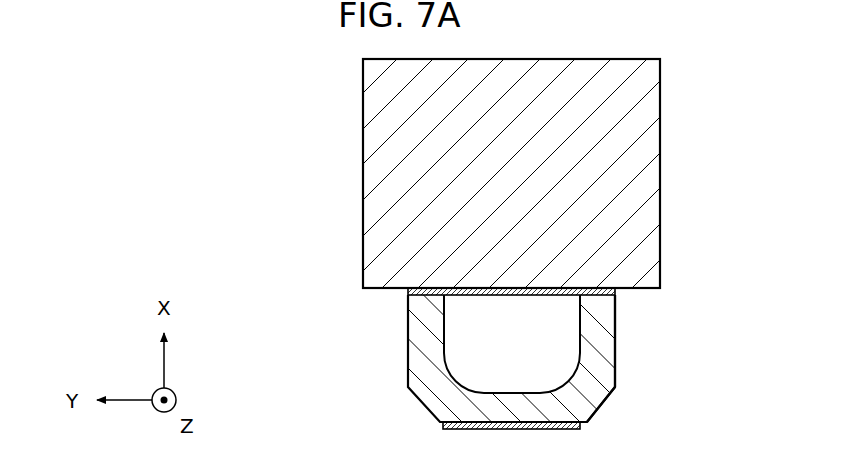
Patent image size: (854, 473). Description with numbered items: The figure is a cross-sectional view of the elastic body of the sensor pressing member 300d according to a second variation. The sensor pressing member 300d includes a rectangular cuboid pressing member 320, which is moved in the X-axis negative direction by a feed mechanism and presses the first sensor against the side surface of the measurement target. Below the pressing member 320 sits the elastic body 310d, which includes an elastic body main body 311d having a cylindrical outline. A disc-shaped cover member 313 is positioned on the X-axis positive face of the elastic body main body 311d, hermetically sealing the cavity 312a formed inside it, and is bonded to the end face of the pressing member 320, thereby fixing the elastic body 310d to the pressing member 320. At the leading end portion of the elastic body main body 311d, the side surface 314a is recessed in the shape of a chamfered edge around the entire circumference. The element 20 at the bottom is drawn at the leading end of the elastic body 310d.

The sensor pressing member 300d is at (318, 138).
The pressing member 320 is at (363, 170).
The cover member 313 is at (617, 292).
The elastic body 310d is at (408, 325).
The elastic body main body 311d is at (615, 337).
The cavity 312a is at (450, 372).
The side surface 314a is at (605, 407).
The substrate / bonding layer 20 is at (447, 425).